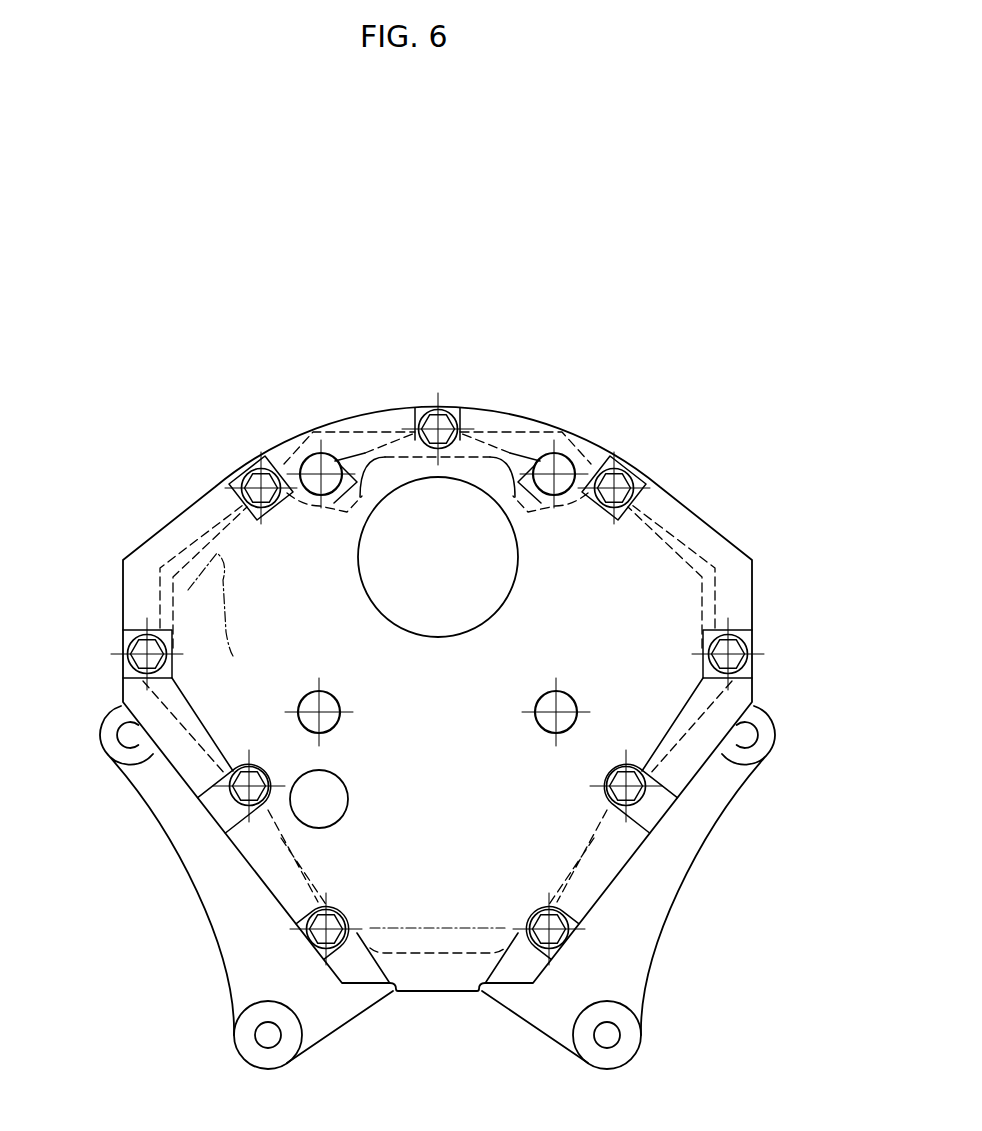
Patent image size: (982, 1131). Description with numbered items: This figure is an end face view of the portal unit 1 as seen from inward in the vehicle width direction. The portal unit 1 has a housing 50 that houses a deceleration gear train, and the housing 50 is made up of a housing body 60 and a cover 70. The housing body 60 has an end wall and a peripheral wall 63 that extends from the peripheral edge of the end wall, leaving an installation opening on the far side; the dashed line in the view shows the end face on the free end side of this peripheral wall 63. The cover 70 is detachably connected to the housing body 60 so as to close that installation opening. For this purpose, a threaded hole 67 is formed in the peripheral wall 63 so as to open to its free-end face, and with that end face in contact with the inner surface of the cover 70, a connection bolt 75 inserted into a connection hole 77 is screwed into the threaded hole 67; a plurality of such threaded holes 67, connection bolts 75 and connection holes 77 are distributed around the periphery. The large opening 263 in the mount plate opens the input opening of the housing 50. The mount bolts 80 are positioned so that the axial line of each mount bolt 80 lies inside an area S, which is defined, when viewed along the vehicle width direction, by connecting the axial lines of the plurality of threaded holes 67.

The portal unit 1 is at (589, 352).
The housing 50 is at (732, 882).
The housing body 60 is at (643, 912).
The peripheral wall 63 is at (192, 538).
The threaded hole 67 is at (436, 671).
The cover 70 is at (712, 541).
The connection bolt 75 is at (436, 671).
The connection hole 77 is at (446, 415).
The mount bolt 80 is at (321, 478).
The opening 263 is at (457, 568).
The area S is at (346, 740).